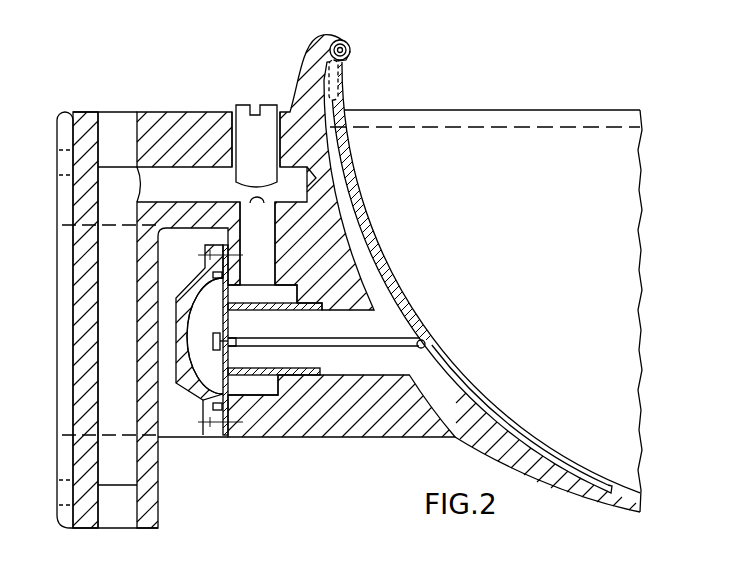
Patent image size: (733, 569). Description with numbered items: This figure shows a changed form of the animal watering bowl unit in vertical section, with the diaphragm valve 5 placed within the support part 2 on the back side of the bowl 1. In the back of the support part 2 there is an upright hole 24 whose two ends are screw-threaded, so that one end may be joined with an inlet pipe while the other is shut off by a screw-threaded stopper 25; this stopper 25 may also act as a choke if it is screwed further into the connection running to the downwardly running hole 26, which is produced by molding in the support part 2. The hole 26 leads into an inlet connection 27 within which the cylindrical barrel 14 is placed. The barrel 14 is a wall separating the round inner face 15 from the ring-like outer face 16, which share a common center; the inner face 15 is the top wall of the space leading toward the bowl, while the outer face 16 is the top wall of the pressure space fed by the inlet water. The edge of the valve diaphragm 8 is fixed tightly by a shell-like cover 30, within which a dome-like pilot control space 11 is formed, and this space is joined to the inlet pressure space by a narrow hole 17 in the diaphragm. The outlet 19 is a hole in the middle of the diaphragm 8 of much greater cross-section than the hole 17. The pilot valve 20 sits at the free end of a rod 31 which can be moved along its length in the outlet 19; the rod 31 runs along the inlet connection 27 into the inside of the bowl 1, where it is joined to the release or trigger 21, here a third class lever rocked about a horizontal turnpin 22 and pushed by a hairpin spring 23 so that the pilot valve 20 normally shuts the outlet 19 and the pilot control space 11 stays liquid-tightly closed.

The bowl 1 is at (592, 487).
The support part 2 is at (68, 108).
The diaphragm valve 5 is at (212, 441).
The valve diaphragm 8 is at (221, 356).
The pilot control space 11 is at (218, 325).
The cylindrical barrel 14 is at (240, 315).
The inner face 15 is at (275, 358).
The outer face 16 is at (272, 398).
The narrow hole 17 is at (238, 294).
The outlet 19 is at (230, 348).
The pilot valve 20 is at (210, 340).
The release or trigger 21 is at (375, 233).
The turnpin 22 is at (347, 45).
The hairpin spring 23 is at (343, 98).
The upright hole 24 is at (112, 320).
The screw-threaded stopper 25 is at (270, 154).
The downwardly running hole 26 is at (279, 291).
The inlet connection 27 is at (344, 334).
The shell-like cover 30 is at (193, 290).
The rod 31 is at (280, 334).